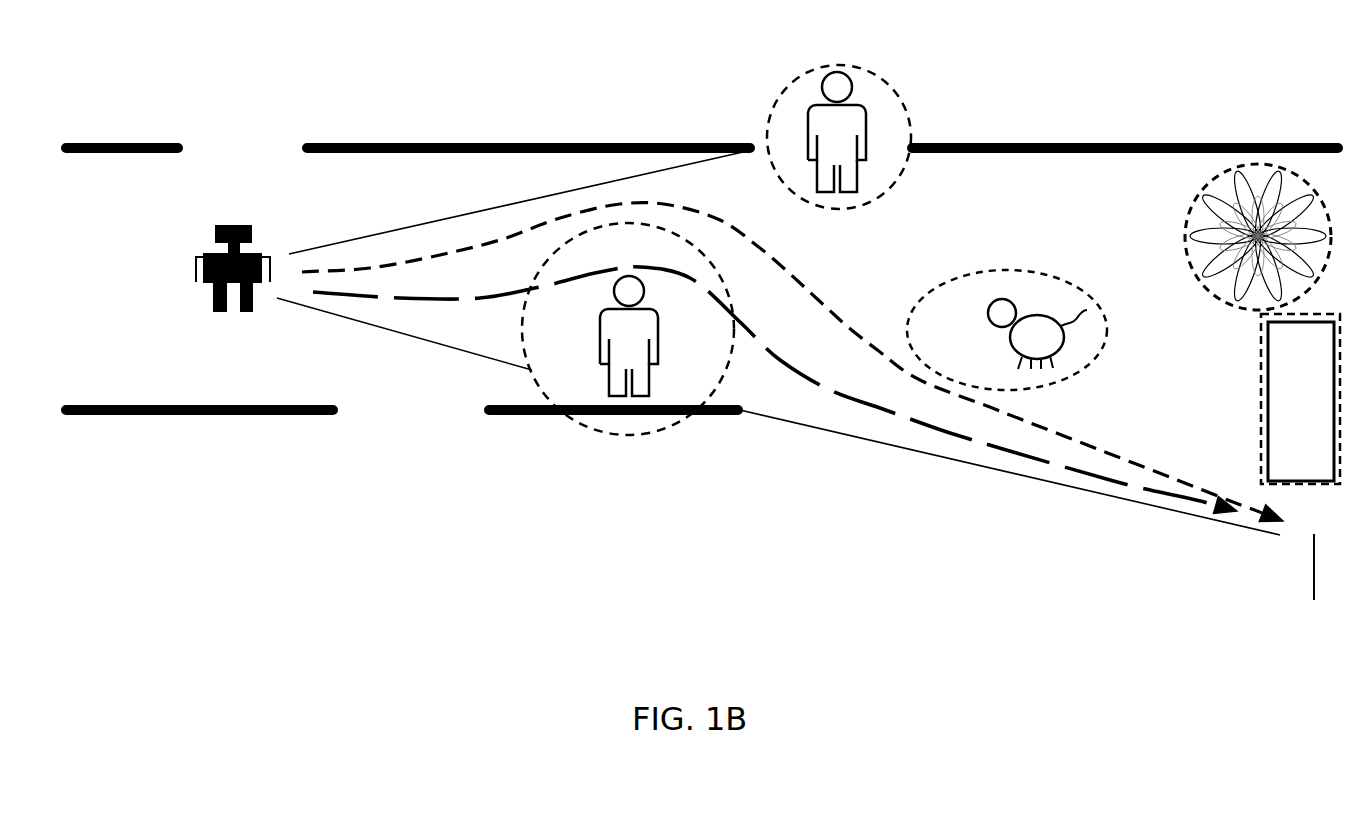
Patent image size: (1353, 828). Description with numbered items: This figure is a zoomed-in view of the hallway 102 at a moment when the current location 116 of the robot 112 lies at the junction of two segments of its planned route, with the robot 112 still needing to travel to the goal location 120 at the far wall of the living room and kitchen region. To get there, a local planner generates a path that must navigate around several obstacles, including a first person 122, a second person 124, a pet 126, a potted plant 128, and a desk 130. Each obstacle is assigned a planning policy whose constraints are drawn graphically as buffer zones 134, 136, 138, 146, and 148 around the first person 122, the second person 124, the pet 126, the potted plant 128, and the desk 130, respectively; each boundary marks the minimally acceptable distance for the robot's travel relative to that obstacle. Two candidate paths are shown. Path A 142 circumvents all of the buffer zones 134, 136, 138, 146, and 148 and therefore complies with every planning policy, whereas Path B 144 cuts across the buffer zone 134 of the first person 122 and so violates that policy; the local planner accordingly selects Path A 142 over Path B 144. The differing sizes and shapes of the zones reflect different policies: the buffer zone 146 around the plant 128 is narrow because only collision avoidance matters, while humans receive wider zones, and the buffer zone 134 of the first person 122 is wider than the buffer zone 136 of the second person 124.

The hallway 102 is at (203, 506).
The robot 112 is at (195, 273).
The current location 116 is at (158, 363).
The goal location 120 is at (1284, 603).
The first person 122 is at (602, 342).
The second person 124 is at (807, 121).
The pet 126 is at (1012, 350).
The potted plant 128 is at (1258, 236).
The desk 130 is at (1322, 474).
The buffer zone 134 is at (640, 436).
The buffer zone 136 is at (805, 73).
The buffer zone 138 is at (926, 291).
The Path A 142 is at (1097, 449).
The Path B 144 is at (910, 423).
The buffer zone 146 is at (1220, 300).
The buffer zone 148 is at (1261, 393).